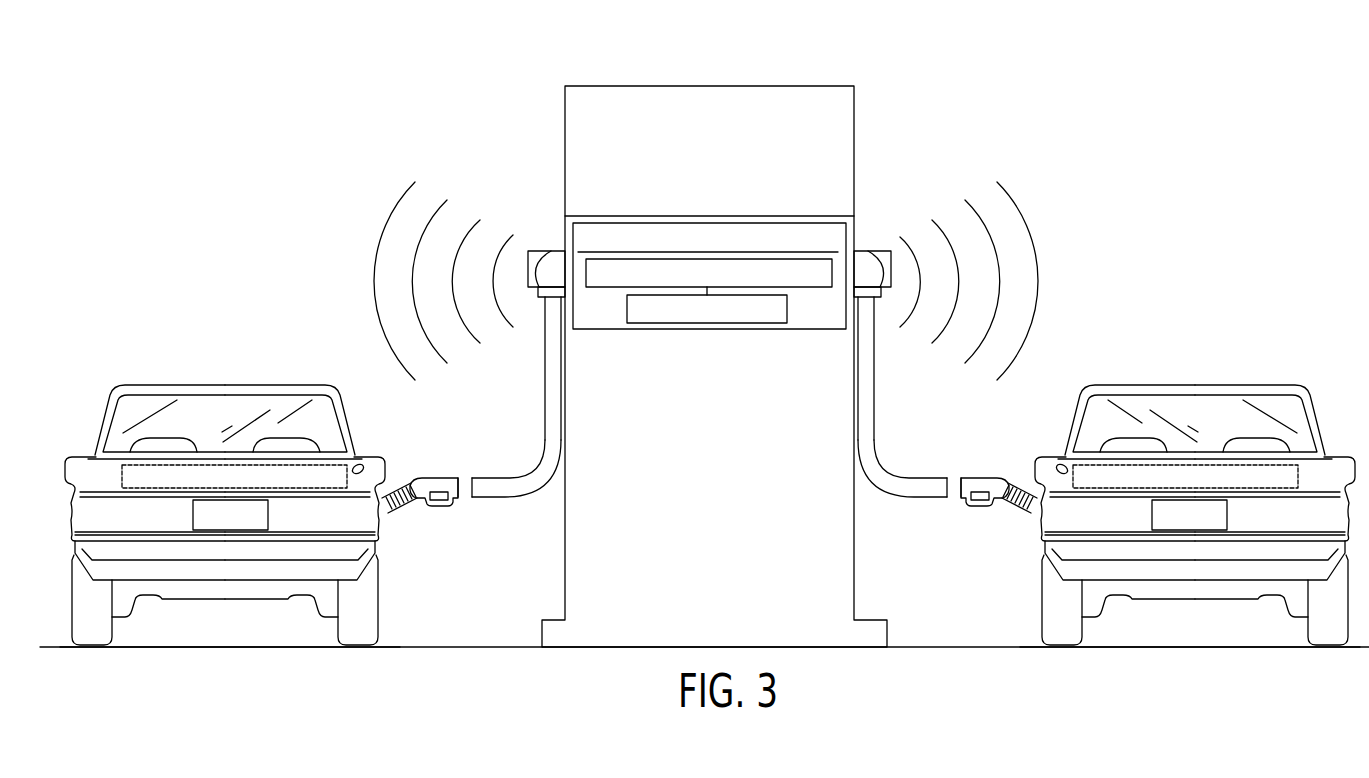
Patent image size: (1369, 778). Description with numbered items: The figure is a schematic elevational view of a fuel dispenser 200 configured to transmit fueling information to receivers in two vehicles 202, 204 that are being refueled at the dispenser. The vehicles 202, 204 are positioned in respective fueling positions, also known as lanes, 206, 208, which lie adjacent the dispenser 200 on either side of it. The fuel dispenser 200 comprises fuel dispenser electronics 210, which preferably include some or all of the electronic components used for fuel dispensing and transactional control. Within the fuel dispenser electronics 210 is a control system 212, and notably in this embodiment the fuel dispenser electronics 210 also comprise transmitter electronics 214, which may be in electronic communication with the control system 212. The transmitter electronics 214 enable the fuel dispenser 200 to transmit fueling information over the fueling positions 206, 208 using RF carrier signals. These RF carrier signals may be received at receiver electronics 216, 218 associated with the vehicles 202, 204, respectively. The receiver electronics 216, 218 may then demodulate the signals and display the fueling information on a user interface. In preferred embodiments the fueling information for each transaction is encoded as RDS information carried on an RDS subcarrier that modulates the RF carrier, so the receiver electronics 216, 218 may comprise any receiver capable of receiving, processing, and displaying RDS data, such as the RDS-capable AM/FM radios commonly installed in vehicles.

The fuel dispenser 200 is at (778, 80).
The vehicle 202 is at (256, 380).
The vehicle 204 is at (1244, 380).
The fueling position 206 is at (268, 649).
The fueling position 208 is at (1205, 649).
The fuel dispenser electronics 210 is at (722, 223).
The control system 212 is at (692, 325).
The transmitter electronics 214 is at (622, 288).
The receiver electronics 216 is at (350, 468).
The receiver electronics 218 is at (1070, 468).